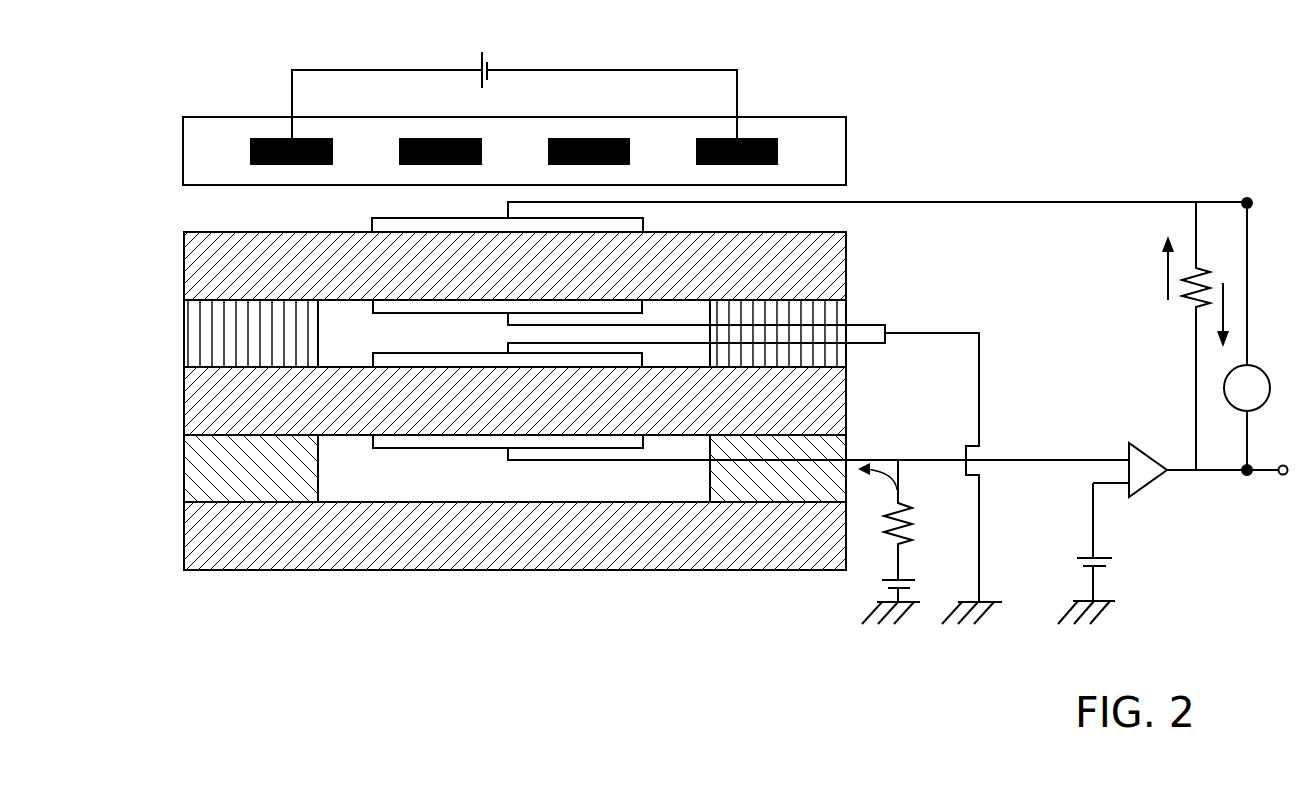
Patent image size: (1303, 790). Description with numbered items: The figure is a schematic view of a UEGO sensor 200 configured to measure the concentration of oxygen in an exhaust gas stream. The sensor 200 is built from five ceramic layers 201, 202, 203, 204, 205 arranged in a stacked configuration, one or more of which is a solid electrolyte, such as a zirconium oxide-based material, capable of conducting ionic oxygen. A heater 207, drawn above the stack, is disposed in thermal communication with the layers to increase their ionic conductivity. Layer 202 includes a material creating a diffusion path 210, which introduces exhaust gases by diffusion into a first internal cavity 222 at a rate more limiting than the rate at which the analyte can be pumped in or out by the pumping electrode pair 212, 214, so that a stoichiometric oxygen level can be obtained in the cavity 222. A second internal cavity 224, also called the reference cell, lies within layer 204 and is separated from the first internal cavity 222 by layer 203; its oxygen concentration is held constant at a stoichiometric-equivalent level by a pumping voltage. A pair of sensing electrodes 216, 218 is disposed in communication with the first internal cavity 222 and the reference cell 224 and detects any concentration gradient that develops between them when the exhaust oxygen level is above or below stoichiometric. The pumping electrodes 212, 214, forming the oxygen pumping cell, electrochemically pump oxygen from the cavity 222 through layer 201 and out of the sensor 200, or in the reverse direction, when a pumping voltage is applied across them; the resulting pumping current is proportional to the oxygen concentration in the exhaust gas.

The UEGO sensor 200 is at (839, 57).
The ceramic layer 201 is at (184, 246).
The ceramic layer 202 is at (184, 314).
The ceramic layer 203 is at (184, 422).
The ceramic layer 204 is at (184, 491).
The ceramic layer 205 is at (184, 560).
The heater 207 is at (250, 140).
The diffusion path 210 is at (217, 348).
The pumping electrode 212 is at (384, 218).
The pumping electrode 214 is at (373, 314).
The sensing electrode 216 is at (373, 356).
The sensing electrode 218 is at (373, 448).
The first internal cavity 222 is at (514, 333).
The second internal cavity 224 is at (514, 468).